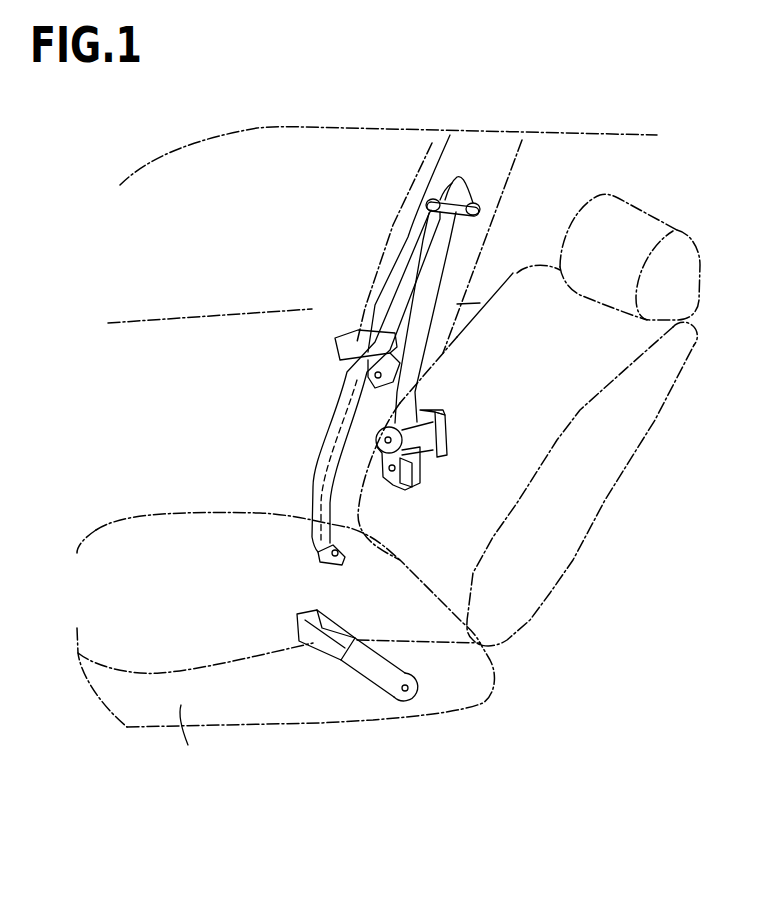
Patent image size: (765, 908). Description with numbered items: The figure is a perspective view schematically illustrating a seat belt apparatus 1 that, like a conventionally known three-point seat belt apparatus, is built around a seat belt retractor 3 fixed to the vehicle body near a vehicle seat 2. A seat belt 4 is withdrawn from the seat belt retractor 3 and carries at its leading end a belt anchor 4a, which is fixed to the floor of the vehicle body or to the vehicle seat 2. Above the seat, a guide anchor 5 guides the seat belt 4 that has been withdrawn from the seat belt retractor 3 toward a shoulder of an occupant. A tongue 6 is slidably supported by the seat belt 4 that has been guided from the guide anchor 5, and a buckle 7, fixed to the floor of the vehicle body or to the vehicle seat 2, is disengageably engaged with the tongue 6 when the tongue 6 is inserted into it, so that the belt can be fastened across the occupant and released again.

The seat belt apparatus 1 is at (478, 512).
The vehicle seat 2 is at (193, 750).
The seat belt retractor 3 is at (449, 437).
The seat belt 4 is at (408, 288).
The belt anchor 4a is at (340, 567).
The guide anchor 5 is at (468, 183).
The tongue 6 is at (335, 352).
The buckle 7 is at (305, 650).